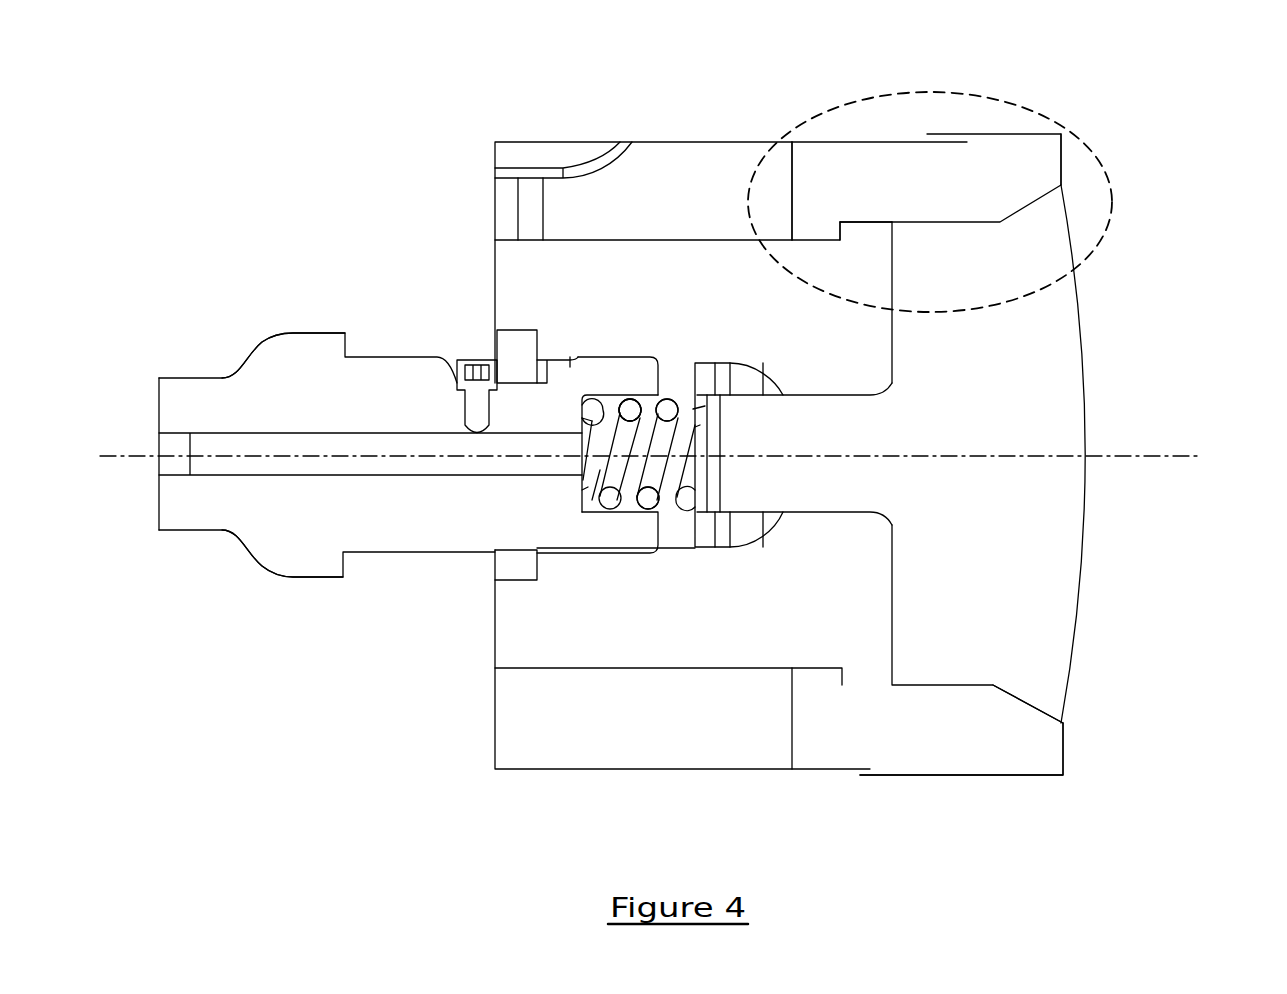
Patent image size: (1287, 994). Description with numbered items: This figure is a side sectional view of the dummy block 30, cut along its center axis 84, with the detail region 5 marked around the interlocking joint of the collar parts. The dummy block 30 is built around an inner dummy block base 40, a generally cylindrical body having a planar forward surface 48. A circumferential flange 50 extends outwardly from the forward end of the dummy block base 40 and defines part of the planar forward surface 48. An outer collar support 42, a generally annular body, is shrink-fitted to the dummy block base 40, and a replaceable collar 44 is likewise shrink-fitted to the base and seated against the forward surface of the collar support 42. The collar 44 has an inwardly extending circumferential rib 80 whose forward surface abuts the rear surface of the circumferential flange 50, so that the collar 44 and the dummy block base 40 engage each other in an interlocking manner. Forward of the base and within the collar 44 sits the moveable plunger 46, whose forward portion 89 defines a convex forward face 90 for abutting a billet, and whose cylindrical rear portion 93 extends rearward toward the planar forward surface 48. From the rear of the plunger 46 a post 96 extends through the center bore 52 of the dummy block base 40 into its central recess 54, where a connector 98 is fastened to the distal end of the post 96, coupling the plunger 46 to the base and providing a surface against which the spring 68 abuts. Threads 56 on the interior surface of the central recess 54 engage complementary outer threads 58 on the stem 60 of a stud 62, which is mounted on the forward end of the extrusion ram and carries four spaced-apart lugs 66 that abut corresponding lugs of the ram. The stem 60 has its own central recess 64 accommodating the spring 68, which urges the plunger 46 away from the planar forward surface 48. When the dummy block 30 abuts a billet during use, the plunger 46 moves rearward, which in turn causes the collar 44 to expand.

The dummy block 30 is at (1203, 62).
The detail region 5 is at (1062, 120).
The dummy block base 40 is at (650, 287).
The collar support 42 is at (714, 157).
The circumferential rib 80 is at (813, 228).
The circumferential flange 50 is at (863, 230).
The collar 44 is at (979, 147).
The plunger 46 is at (1100, 318).
The convex forward face 90 is at (1092, 502).
The forward portion 89 is at (1037, 675).
The rear portion 93 is at (963, 667).
The planar forward surface 48 is at (897, 640).
The post 96 is at (840, 487).
The center bore 52 is at (800, 528).
The connector 98 is at (737, 522).
The central recess 54 is at (673, 535).
The outer threads 58 is at (607, 550).
The threads 56 is at (564, 560).
The stem 60 is at (548, 530).
The lugs 66 is at (313, 343).
The stud 62 is at (167, 502).
The center axis 84 is at (123, 453).
The central recess 64 is at (607, 398).
The spring 68 is at (630, 405).